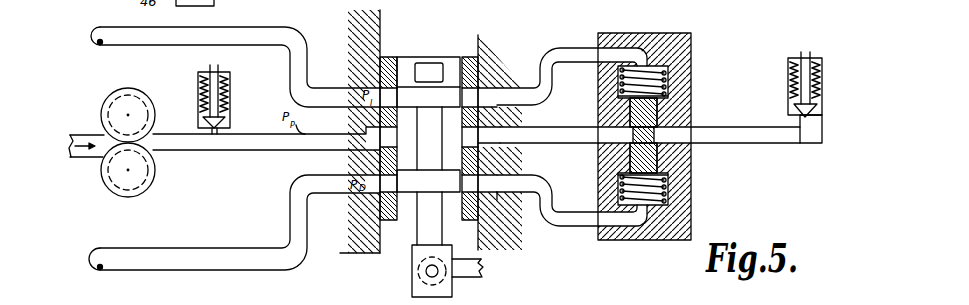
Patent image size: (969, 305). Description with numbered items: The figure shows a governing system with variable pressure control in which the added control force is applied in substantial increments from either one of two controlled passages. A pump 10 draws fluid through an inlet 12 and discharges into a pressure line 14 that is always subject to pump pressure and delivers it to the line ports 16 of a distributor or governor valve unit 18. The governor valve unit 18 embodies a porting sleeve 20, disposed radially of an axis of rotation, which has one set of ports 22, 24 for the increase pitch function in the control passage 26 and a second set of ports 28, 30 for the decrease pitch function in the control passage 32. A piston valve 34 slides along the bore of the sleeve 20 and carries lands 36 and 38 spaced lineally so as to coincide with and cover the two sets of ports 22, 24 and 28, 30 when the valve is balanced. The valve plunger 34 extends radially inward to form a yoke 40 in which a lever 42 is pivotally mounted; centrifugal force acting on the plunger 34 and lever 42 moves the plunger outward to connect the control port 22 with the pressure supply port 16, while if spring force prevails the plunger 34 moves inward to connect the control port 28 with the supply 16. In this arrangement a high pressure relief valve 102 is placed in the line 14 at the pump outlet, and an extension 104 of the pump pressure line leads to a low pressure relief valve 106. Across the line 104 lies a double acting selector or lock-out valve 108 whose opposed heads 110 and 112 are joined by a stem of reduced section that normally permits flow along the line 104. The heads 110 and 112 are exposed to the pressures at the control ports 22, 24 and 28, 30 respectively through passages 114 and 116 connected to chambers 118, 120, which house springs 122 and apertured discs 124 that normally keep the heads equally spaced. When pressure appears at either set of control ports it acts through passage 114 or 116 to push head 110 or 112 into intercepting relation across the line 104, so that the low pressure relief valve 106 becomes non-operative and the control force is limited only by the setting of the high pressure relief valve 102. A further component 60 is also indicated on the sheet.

The pump 10 is at (143, 194).
The inlet 12 is at (85, 158).
The pressure line 14 is at (264, 151).
The line ports 16 is at (497, 131).
The governor valve unit 18 is at (524, 55).
The porting sleeve 20 is at (382, 211).
The port 22 is at (387, 85).
The port 24 is at (470, 88).
The control passage 26 is at (330, 98).
The port 28 is at (363, 172).
The port 30 is at (495, 202).
The control passage 32 is at (242, 250).
The piston valve 34 is at (424, 227).
The land 36 is at (406, 90).
The land 38 is at (452, 187).
The yoke 40 is at (412, 290).
The lever 42 is at (483, 278).
The control unit 60 is at (594, 4).
The high pressure relief valve 102 is at (198, 79).
The extension of the pump pressure line 104 is at (573, 144).
The low pressure relief valve 106 is at (788, 77).
The double acting selector or lock-out valve 108 is at (664, 240).
The head 110 is at (660, 106).
The head 112 is at (662, 163).
The passage 114 is at (566, 49).
The passage 116 is at (582, 228).
The chamber 118 is at (668, 72).
The chamber 120 is at (668, 192).
The springs 122 is at (665, 86).
The apertured discs 124 is at (628, 98).